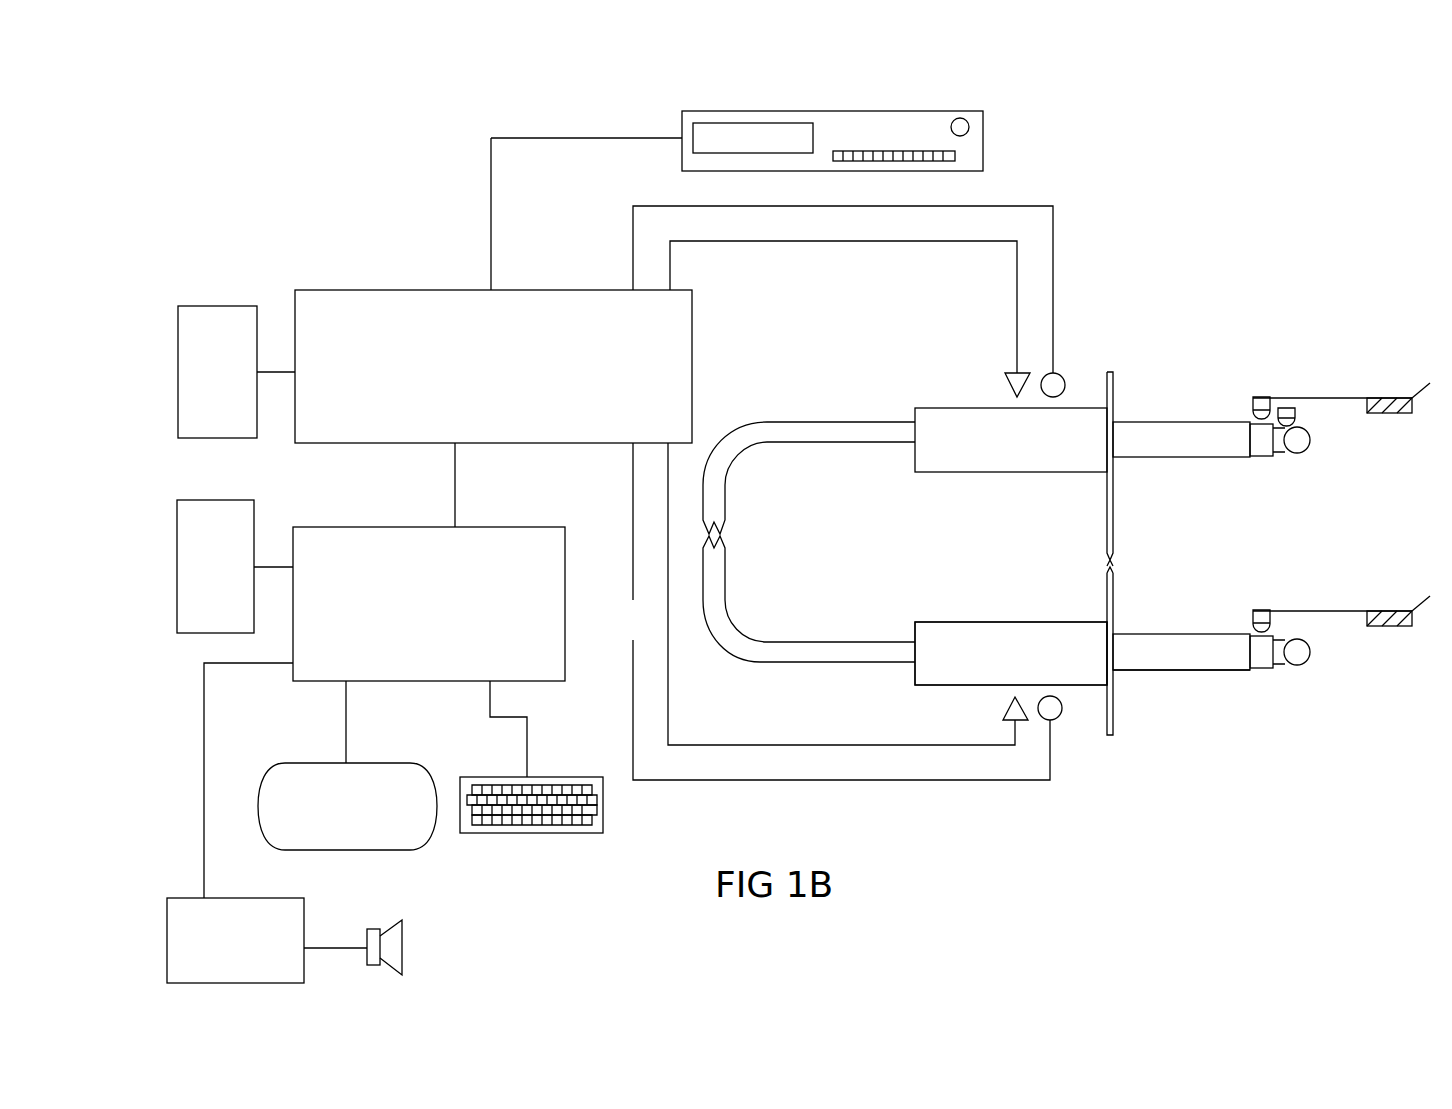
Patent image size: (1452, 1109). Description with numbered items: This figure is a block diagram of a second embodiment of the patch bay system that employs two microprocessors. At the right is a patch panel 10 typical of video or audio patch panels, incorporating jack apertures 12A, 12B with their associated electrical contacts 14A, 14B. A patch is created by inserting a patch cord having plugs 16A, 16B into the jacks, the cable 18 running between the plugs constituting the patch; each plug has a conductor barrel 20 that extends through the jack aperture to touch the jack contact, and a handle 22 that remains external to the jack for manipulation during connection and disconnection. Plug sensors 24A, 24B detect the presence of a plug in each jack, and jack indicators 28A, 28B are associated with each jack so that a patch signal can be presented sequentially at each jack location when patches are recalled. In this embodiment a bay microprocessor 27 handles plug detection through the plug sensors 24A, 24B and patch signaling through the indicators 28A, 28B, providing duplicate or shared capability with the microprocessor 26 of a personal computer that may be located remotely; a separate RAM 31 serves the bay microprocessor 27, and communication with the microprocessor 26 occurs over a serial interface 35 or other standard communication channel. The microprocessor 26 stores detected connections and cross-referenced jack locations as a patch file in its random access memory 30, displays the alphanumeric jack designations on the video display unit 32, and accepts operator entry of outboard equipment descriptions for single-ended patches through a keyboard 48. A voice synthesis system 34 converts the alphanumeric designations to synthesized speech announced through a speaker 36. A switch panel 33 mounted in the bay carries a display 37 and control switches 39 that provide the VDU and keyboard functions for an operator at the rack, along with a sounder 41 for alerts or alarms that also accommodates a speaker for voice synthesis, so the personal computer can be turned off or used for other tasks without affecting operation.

The patch panel 10 is at (1117, 390).
The jack aperture 12A is at (1117, 421).
The jack aperture 12B is at (1117, 633).
The electrical contact 14A is at (1328, 393).
The electrical contact 14B is at (1328, 606).
The plug 16A is at (950, 476).
The plug 16B is at (930, 618).
The cable 18 is at (712, 577).
The conductor barrel 20 is at (1155, 672).
The handle 22 is at (945, 621).
The plug sensor 24A is at (1008, 382).
The plug sensor 24B is at (1005, 712).
The microprocessor 26 is at (330, 681).
The bay microprocessor 27 is at (390, 443).
The jack indicator 28A is at (1060, 380).
The jack indicator 28B is at (1055, 718).
The random access memory 30 is at (216, 502).
The RAM 31 is at (222, 306).
The video display unit 32 is at (405, 764).
The switch panel 33 is at (983, 152).
The voice synthesis system 34 is at (304, 926).
The RS 232 interface 35 is at (458, 492).
The speaker 36 is at (405, 937).
The display 37 is at (790, 128).
The control switches 39 is at (950, 156).
The sounder 41 is at (965, 130).
The keyboard 48 is at (552, 777).